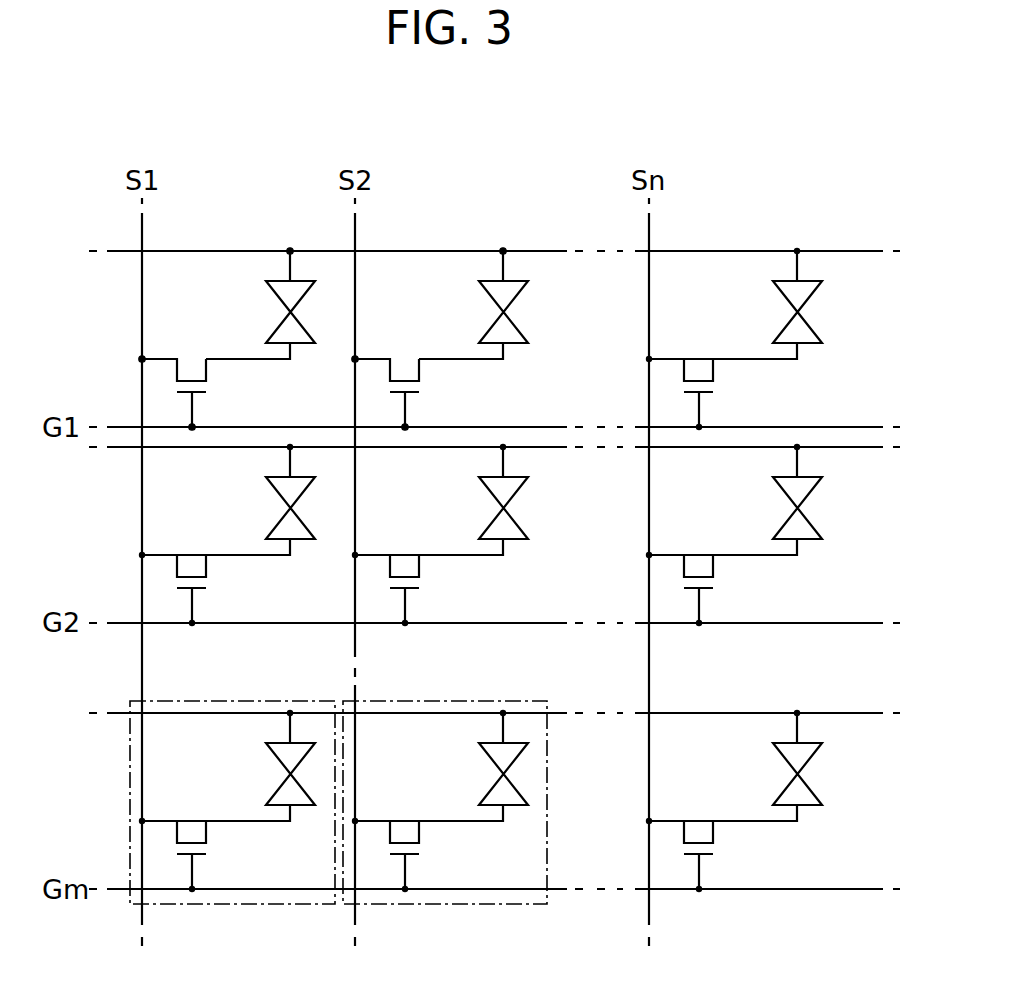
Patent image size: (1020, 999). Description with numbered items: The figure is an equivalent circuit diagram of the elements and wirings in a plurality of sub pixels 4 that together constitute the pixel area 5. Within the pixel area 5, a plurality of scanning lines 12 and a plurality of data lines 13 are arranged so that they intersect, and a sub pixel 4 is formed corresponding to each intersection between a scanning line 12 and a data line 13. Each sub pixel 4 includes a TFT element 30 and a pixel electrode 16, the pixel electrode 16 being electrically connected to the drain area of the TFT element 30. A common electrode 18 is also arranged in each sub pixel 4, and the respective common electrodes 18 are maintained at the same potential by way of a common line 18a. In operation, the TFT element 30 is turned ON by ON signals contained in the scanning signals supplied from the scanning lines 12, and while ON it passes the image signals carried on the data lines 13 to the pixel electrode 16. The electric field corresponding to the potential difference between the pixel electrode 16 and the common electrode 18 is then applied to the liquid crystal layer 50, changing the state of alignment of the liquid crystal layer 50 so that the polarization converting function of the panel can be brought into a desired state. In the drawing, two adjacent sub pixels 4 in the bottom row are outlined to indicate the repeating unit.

The pixel area 5 is at (812, 128).
The data line 13 is at (143, 224).
The scanning line 12 is at (861, 420).
The common line 18a is at (875, 253).
The common electrode 18 is at (289, 270).
The liquid crystal layer 50 is at (262, 312).
The pixel electrode 16 is at (292, 349).
The TFT element 30 is at (220, 386).
The sub pixel 4 is at (262, 907).